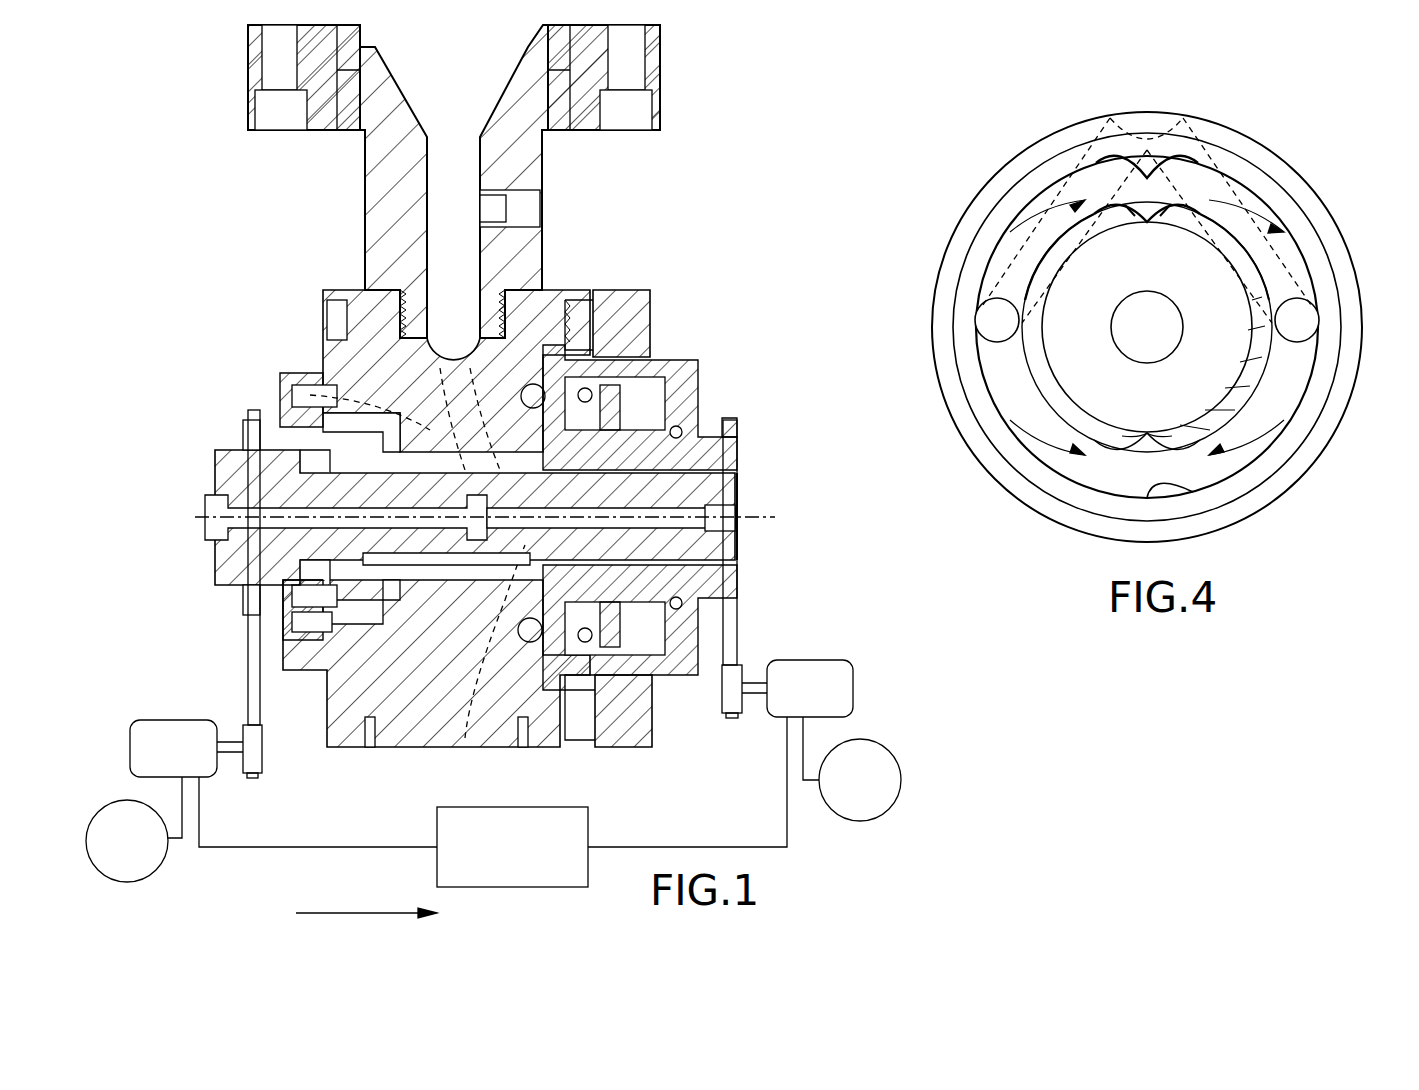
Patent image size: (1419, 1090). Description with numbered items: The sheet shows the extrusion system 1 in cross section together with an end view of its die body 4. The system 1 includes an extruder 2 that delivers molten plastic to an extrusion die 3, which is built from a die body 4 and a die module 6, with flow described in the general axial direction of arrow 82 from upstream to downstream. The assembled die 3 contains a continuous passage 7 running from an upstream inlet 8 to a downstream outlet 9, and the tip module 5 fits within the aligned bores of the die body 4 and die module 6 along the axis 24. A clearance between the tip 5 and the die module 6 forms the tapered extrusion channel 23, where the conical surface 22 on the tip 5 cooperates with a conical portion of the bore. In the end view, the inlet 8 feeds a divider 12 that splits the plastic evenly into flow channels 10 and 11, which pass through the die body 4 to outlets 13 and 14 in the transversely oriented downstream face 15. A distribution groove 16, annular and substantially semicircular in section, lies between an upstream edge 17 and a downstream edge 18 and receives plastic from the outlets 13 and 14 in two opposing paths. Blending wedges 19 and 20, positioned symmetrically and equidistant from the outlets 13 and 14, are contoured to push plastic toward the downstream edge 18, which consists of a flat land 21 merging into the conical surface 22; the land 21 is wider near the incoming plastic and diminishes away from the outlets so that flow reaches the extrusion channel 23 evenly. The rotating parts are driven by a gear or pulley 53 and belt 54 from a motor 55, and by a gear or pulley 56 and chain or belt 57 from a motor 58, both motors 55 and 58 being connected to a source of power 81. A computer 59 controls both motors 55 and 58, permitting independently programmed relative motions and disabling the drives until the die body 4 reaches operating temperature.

In FIG. 1, the extrusion system 1 is at (215, 241).
In FIG. 1, the extruder 2 is at (572, 152).
In FIG. 1, the extrusion die 3 is at (607, 275).
In FIG. 1, the die body 4 is at (355, 345).
In FIG. 1, the tip module 5 is at (330, 488).
In FIG. 1, the die module 6 is at (712, 445).
In FIG. 1, the passage 7 is at (535, 655).
In FIG. 1, the inlet 8 is at (452, 362).
In FIG. 4, the inlet 8 is at (1135, 125).
In FIG. 1, the downstream outlet 9 is at (737, 475).
In FIG. 4, the flow channel 10 is at (1057, 188).
In FIG. 1, the flow channel 11 is at (380, 380).
In FIG. 4, the flow channel 11 is at (1243, 203).
In FIG. 1, the divider 12 is at (468, 360).
In FIG. 4, the divider 12 is at (1155, 150).
In FIG. 4, the outlet 13 is at (992, 318).
In FIG. 4, the outlet 14 is at (1302, 318).
In FIG. 1, the downstream face 15 is at (600, 675).
In FIG. 4, the downstream face 15 is at (1078, 523).
In FIG. 1, the distribution groove 16 is at (465, 740).
In FIG. 4, the distribution groove 16 is at (1125, 487).
In FIG. 4, the upstream edge 17 is at (995, 418).
In FIG. 4, the downstream edge 18 is at (1010, 358).
In FIG. 4, the blending wedge 19 is at (1207, 170).
In FIG. 4, the blending wedge 20 is at (1195, 494).
In FIG. 4, the land 21 is at (1050, 395).
In FIG. 1, the conical surface 22 is at (566, 352).
In FIG. 4, the conical surface 22 is at (1196, 401).
In FIG. 1, the extrusion channel 23 is at (600, 405).
In FIG. 1, the axis 24 is at (770, 518).
In FIG. 1, the gear or pulley 53 is at (262, 762).
In FIG. 1, the belt 54 is at (250, 656).
In FIG. 1, the motor 55 is at (150, 720).
In FIG. 1, the gear or pulley 56 is at (722, 708).
In FIG. 1, the chain or belt 57 is at (738, 640).
In FIG. 1, the motor 58 is at (820, 660).
In FIG. 1, the computer 59 is at (447, 807).
In FIG. 1, the source of power 81 is at (122, 800).
In FIG. 1, the arrow 82 is at (315, 913).